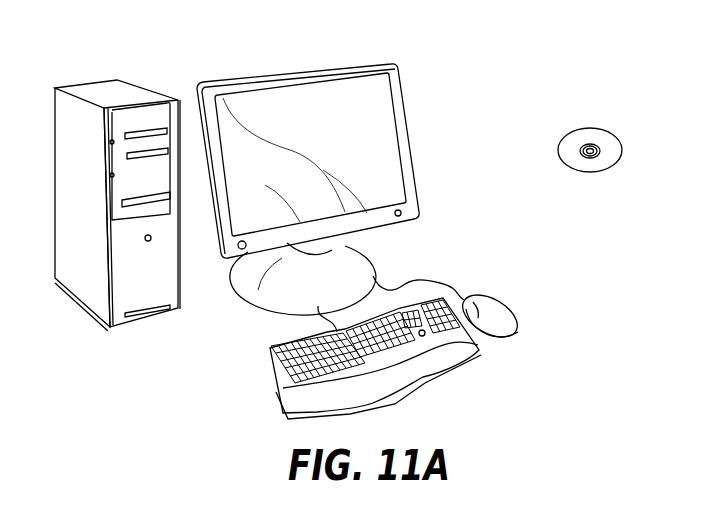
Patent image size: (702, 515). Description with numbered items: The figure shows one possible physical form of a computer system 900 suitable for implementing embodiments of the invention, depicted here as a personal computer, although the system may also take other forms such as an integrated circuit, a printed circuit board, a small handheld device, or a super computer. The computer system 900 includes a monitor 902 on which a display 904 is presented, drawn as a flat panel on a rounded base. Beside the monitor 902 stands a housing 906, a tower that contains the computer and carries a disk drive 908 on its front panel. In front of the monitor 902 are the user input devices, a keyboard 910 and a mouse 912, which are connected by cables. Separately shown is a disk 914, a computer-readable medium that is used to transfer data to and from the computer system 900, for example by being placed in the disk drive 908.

The computer system 900 is at (518, 47).
The monitor 902 is at (413, 157).
The display 904 is at (370, 101).
The housing 906 is at (103, 92).
The disk drive 908 is at (163, 197).
The keyboard 910 is at (278, 386).
The mouse 912 is at (512, 310).
The disk 914 is at (607, 129).